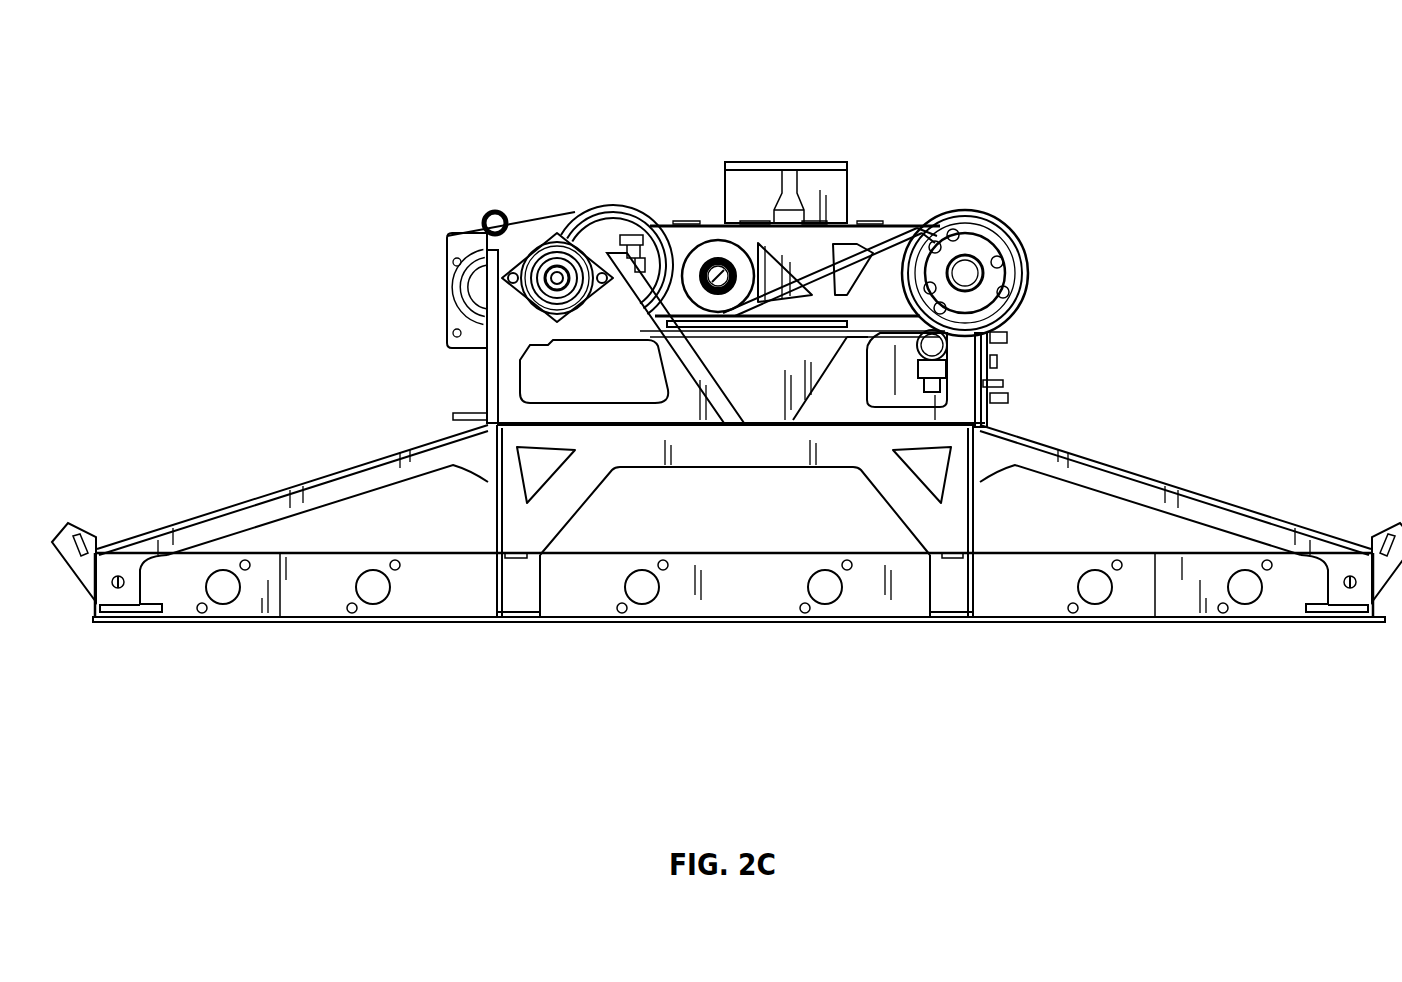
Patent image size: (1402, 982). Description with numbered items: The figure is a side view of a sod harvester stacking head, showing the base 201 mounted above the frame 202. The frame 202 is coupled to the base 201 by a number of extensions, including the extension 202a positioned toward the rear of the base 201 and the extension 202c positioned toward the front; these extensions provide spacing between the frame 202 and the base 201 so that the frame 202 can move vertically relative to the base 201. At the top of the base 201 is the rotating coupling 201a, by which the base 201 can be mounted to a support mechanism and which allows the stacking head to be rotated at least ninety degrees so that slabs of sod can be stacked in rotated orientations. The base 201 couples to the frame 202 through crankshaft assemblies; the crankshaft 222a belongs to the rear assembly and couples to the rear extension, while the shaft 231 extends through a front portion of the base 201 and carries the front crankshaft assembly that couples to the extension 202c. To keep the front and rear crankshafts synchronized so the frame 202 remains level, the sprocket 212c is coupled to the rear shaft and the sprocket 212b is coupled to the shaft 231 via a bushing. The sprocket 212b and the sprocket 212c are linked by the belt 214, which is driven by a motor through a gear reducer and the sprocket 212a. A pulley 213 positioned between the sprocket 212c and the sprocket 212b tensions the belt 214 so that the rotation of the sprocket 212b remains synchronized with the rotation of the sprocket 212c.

The base 201 is at (1030, 245).
The rotating coupling 201a is at (850, 198).
The frame 202 is at (1378, 651).
The extension 202a is at (518, 323).
The extension 202c is at (957, 353).
The sprocket 212a is at (440, 297).
The sprocket 212b is at (1035, 277).
The sprocket 212c is at (600, 205).
The pulley 213 is at (712, 305).
The belt 214 is at (792, 340).
The crankshaft 222a is at (637, 258).
The shaft 231 is at (978, 290).